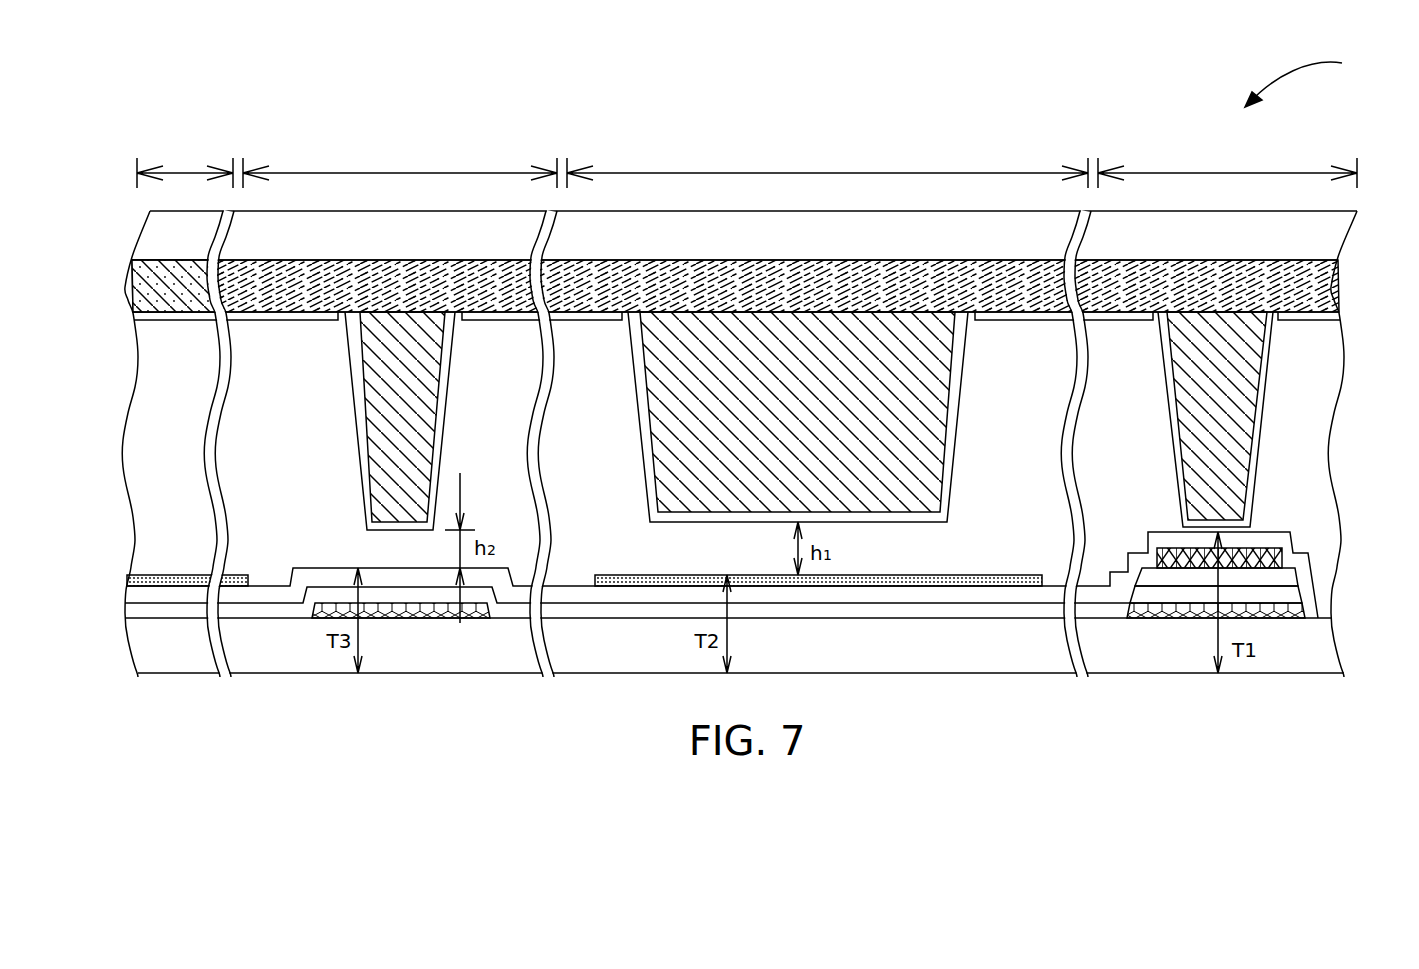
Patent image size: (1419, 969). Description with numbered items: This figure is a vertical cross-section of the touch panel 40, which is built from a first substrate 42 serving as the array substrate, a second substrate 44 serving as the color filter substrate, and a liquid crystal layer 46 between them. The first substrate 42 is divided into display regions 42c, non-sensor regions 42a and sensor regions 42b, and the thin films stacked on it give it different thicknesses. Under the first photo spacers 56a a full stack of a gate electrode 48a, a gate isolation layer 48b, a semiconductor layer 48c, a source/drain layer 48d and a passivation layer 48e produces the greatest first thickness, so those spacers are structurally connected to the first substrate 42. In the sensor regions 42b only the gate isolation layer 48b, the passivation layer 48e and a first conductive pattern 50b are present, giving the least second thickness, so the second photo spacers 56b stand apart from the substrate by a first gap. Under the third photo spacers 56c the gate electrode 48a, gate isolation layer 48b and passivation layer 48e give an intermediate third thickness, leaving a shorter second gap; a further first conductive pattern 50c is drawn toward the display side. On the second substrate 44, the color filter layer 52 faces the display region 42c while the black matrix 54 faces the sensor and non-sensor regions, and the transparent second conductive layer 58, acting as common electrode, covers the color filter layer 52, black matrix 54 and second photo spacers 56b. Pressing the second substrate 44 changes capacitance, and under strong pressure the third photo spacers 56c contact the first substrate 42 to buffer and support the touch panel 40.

The touch panel 40 is at (1306, 81).
The first substrate 42 is at (167, 660).
The non-sensor regions 42a is at (800, 163).
The sensor regions 42b is at (827, 163).
The display regions 42c is at (185, 163).
The second substrate 44 is at (168, 250).
The liquid crystal layer 46 is at (1307, 457).
The gate electrode 48a is at (385, 612).
The gate isolation layer 48b is at (200, 612).
The semiconductor layer 48c is at (1287, 578).
The source/drain layer 48d is at (1287, 553).
The passivation layer 48e is at (148, 597).
The first conductive pattern 50b is at (612, 575).
The doped region 50c is at (233, 575).
The color filter layer 52 is at (164, 296).
The black matrix 54 is at (379, 296).
The first photo spacers 56a is at (1201, 405).
The second photo spacers 56b is at (774, 405).
The third photo spacers 56c is at (382, 405).
The second conductive layer 58 is at (1308, 322).